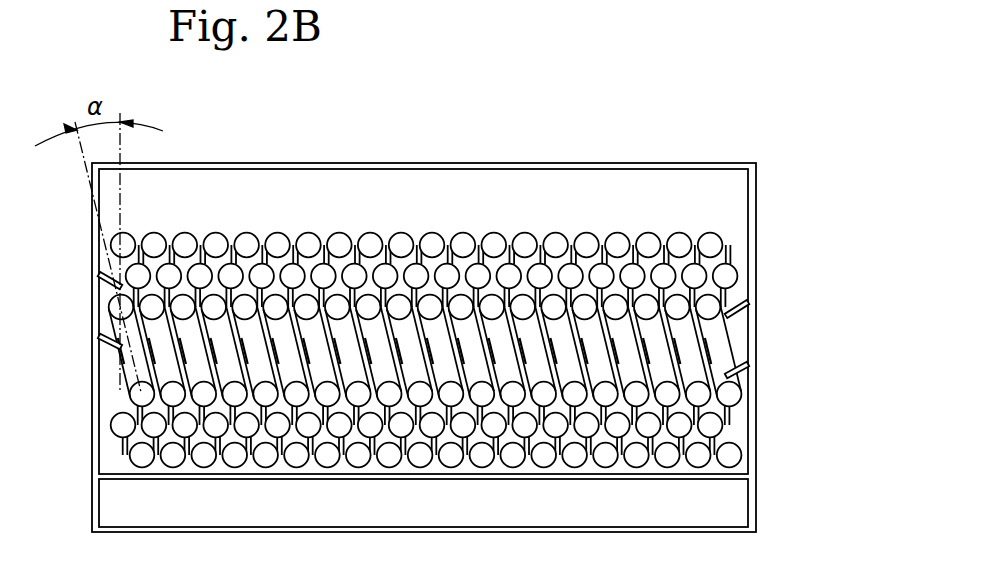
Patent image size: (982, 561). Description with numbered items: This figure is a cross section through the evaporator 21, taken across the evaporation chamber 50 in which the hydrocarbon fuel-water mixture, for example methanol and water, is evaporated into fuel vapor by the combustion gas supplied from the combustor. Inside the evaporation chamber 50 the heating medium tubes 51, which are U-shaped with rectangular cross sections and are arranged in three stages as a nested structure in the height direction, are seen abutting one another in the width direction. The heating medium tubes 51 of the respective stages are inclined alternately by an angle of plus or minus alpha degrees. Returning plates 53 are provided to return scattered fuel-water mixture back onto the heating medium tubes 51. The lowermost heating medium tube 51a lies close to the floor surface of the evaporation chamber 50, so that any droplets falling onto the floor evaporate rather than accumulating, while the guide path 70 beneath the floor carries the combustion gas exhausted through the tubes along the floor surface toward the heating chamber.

The evaporator 21 is at (496, 148).
The evaporation chamber 50 is at (733, 197).
The heating medium tubes 51 is at (311, 233).
The lowermost heating medium tube 51a is at (740, 458).
The returning plates 53 is at (113, 348).
The guide path 70 is at (737, 505).